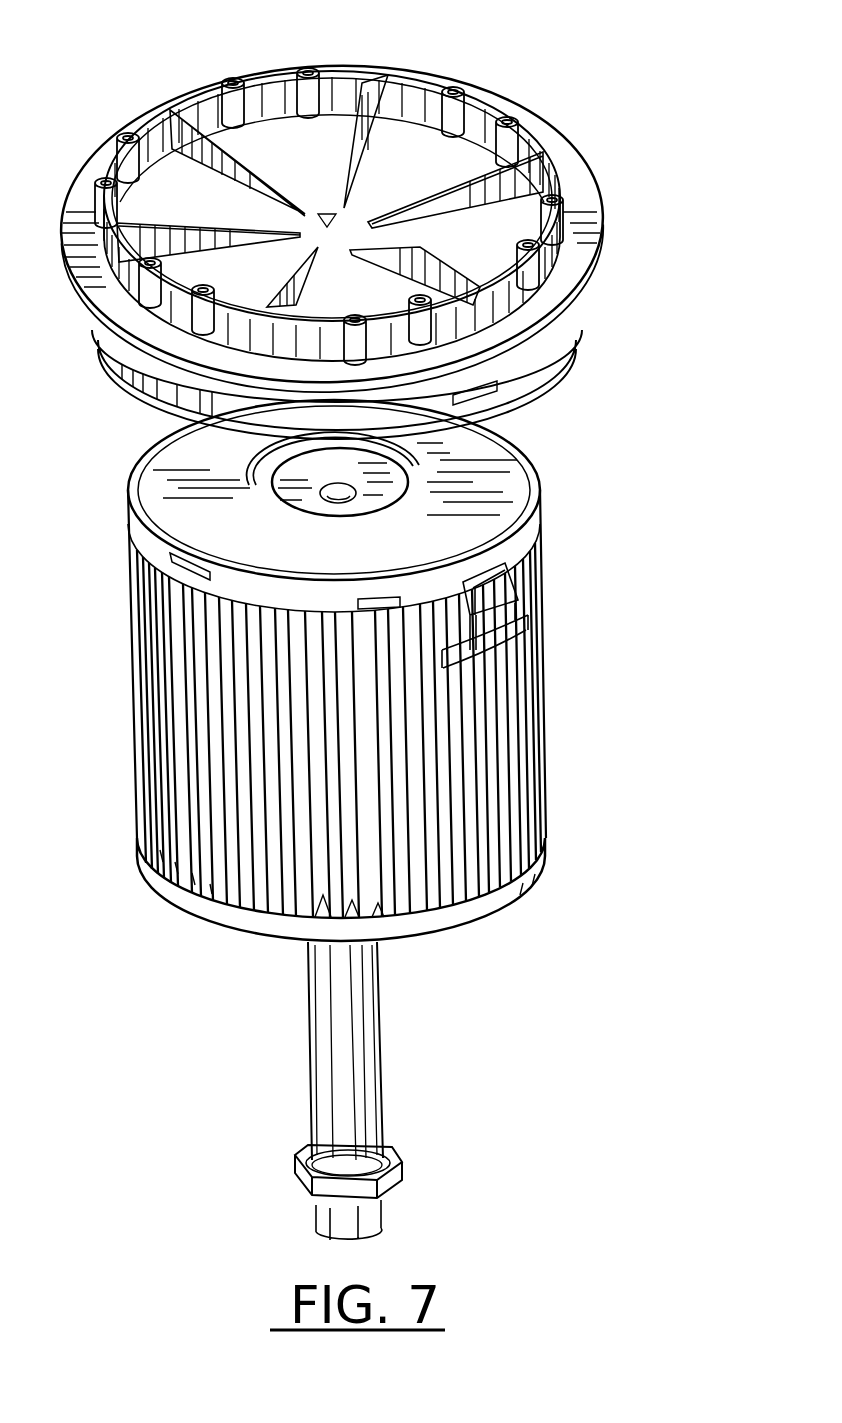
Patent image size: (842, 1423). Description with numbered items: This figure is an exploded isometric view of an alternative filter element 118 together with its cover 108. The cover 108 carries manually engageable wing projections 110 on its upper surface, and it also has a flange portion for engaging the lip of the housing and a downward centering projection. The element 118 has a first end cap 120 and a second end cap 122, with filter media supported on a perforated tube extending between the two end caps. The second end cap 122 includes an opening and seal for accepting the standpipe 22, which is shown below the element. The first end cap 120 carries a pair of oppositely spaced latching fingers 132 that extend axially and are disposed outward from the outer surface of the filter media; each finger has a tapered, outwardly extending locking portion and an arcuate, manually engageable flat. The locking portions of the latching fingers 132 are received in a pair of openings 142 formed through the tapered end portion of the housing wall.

The cover 108 is at (273, 78).
The wing projections 110 is at (362, 107).
The openings 142 is at (500, 405).
The filter element 118 is at (558, 731).
The first end cap 120 is at (387, 560).
The latching fingers 132 is at (520, 637).
The second end cap 122 is at (510, 895).
The standpipe 22 is at (367, 1080).